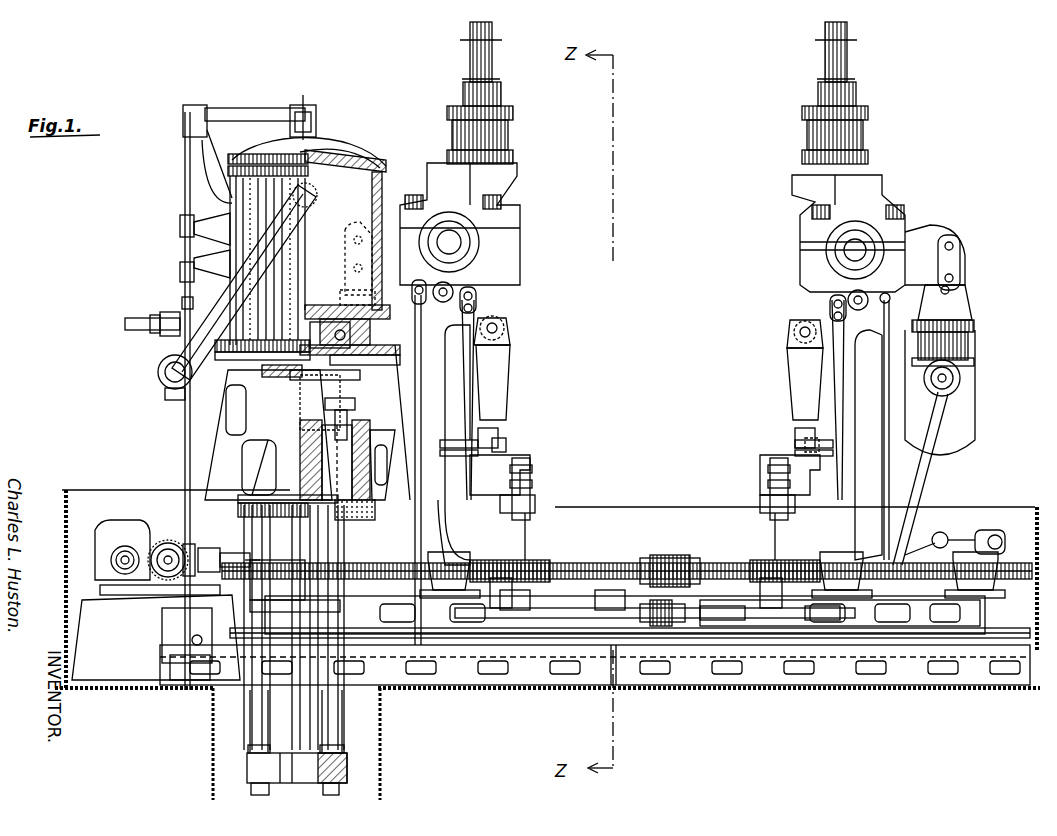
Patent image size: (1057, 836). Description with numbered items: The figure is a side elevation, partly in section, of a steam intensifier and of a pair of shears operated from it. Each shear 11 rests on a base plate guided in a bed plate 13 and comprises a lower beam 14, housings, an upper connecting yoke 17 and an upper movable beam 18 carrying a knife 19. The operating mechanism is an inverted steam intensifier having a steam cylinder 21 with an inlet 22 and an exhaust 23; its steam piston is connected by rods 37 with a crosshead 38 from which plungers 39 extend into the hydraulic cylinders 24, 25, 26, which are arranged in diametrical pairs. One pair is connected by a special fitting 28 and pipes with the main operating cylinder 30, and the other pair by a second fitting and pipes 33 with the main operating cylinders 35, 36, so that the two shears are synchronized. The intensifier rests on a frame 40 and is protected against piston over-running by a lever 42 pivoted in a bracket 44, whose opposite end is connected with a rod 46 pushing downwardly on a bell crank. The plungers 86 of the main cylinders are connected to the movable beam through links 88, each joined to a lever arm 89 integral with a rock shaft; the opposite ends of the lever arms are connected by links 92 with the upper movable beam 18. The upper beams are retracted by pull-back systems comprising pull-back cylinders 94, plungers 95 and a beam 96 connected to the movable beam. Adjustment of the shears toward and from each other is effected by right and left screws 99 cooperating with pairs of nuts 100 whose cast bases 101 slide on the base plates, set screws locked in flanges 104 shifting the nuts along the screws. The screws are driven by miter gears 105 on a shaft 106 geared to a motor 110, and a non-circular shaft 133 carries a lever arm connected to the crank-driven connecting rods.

The shear 11 is at (450, 413).
The bed plate 13 is at (486, 660).
The lower beam 14 is at (532, 492).
The upper connecting yoke 17 is at (432, 180).
The upper movable beam 18 is at (510, 380).
The knife 19 is at (506, 446).
The steam cylinder 21 is at (279, 259).
The inlet 22 is at (125, 325).
The exhaust 23 is at (172, 392).
The hydraulic cylinder 24 is at (370, 458).
The hydraulic cylinder 25 is at (294, 627).
The hydraulic cylinder 26 is at (238, 510).
The special fitting 28 is at (275, 372).
The main operating cylinder 30 is at (975, 355).
The pipe 33 is at (630, 628).
The main operating cylinder 35 is at (395, 325).
The main operating cylinder 36 is at (400, 340).
The rod 37 is at (258, 688).
The crosshead 38 is at (258, 770).
The plunger 39 is at (332, 720).
The frame 40 is at (230, 433).
The lever 42 is at (314, 112).
The bracket 44 is at (215, 150).
The rod 46 is at (184, 185).
The plunger 86 is at (345, 293).
The link 88 is at (962, 255).
The lever arm 89 is at (935, 238).
The link 92 is at (500, 316).
The pull-back cylinder 94 is at (510, 140).
The plunger 95 is at (502, 100).
The beam 96 is at (493, 66).
The screw 99 is at (570, 568).
The nut 100 is at (500, 562).
The cast base 101 is at (848, 550).
The flange 104 is at (514, 586).
The miter gear 105 is at (185, 556).
The shaft 106 is at (150, 562).
The motor 110 is at (122, 520).
The non-circular shaft 133 is at (560, 630).